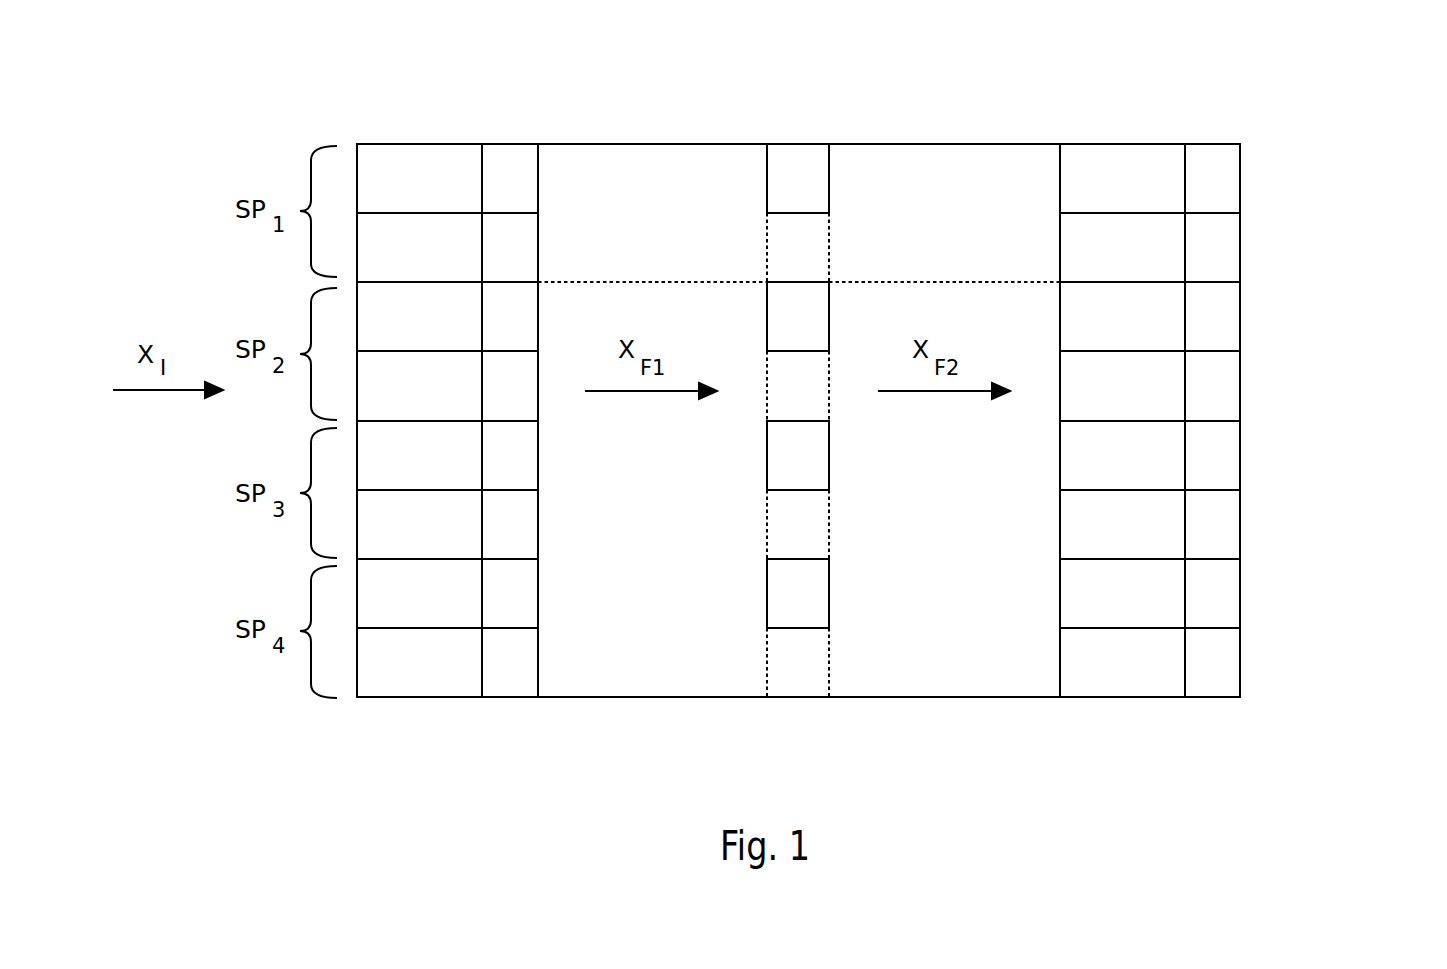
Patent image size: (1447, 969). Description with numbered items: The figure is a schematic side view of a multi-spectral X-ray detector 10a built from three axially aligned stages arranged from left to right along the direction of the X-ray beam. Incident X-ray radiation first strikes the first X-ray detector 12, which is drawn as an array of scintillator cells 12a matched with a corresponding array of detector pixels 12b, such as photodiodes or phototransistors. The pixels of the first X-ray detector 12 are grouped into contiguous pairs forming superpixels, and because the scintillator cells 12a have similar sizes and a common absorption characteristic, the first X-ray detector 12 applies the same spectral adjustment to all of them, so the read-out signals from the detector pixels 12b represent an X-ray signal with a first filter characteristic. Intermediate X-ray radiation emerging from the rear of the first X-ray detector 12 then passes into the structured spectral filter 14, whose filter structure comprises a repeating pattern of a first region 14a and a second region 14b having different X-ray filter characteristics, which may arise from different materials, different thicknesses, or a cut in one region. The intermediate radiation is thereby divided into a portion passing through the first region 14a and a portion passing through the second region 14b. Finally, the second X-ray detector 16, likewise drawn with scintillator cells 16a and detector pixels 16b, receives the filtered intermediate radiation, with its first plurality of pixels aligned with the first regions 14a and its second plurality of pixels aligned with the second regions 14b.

The multi-spectral X-ray detector 10a is at (1295, 217).
The first X-ray detector 12 is at (471, 413).
The scintillator cells 12a is at (437, 697).
The detector pixels 12b is at (519, 697).
The structured spectral filter 14 is at (869, 360).
The first region 14a is at (830, 168).
The second region 14b is at (818, 232).
The second X-ray detector 16 is at (1166, 413).
The scintillator cells 16a is at (1123, 697).
The detector pixels 16b is at (1205, 697).